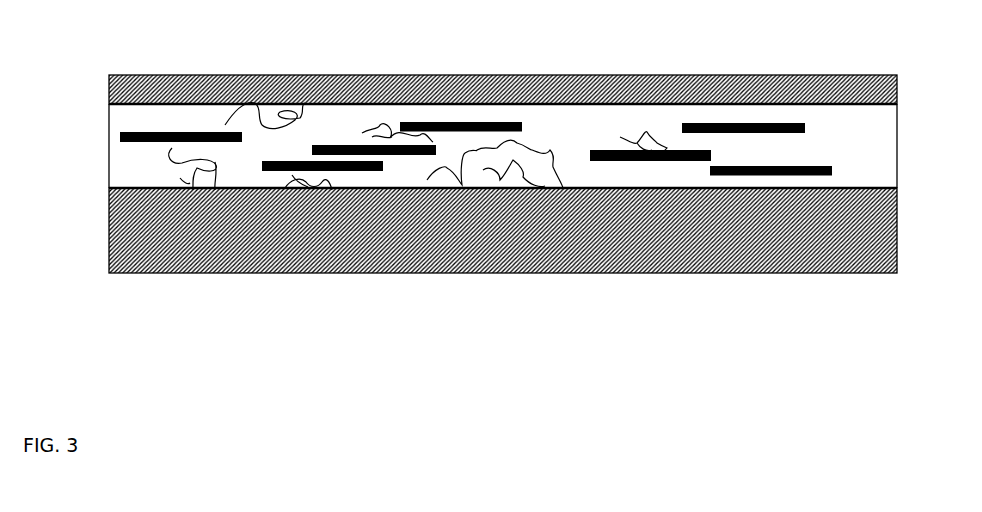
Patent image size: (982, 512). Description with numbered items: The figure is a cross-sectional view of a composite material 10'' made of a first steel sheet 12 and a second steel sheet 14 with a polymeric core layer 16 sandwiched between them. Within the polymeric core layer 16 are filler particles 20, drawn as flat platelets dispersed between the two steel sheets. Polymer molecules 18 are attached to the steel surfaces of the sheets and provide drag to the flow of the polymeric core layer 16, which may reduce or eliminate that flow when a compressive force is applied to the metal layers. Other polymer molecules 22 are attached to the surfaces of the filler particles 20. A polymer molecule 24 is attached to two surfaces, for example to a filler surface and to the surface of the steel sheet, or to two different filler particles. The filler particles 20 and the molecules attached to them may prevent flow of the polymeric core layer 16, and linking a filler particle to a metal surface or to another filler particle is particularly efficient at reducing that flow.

The composite material 10'' is at (503, 105).
The first steel sheet 12 is at (418, 242).
The second steel sheet 14 is at (382, 92).
The polymeric core layer 16 is at (420, 120).
The polymer molecule attached to surface of steel sheet 18 is at (206, 185).
The filler 20 is at (630, 163).
The polymer molecule attached to surface of filler 22 is at (676, 163).
The polymer molecule attached to two surfaces 24 is at (311, 172).